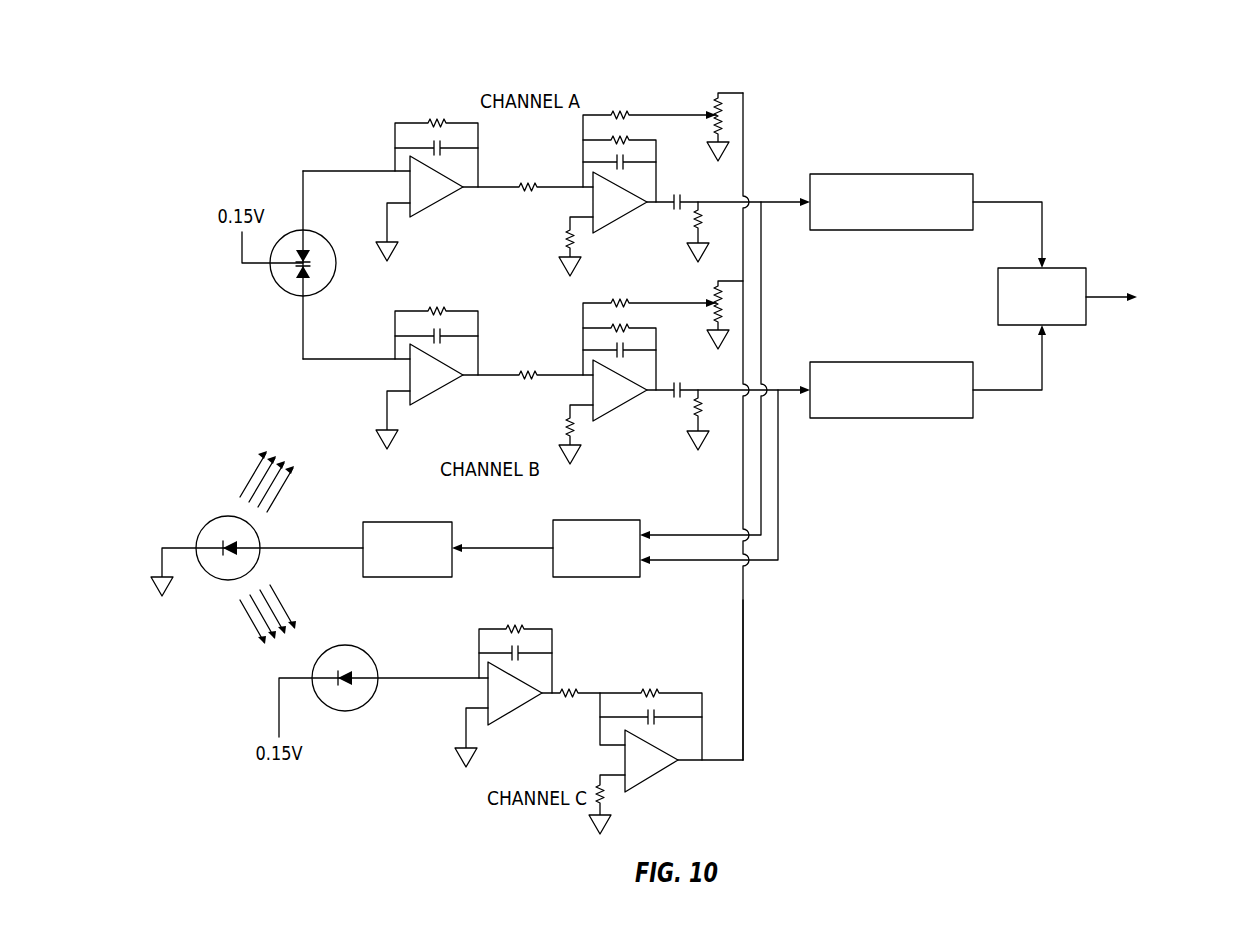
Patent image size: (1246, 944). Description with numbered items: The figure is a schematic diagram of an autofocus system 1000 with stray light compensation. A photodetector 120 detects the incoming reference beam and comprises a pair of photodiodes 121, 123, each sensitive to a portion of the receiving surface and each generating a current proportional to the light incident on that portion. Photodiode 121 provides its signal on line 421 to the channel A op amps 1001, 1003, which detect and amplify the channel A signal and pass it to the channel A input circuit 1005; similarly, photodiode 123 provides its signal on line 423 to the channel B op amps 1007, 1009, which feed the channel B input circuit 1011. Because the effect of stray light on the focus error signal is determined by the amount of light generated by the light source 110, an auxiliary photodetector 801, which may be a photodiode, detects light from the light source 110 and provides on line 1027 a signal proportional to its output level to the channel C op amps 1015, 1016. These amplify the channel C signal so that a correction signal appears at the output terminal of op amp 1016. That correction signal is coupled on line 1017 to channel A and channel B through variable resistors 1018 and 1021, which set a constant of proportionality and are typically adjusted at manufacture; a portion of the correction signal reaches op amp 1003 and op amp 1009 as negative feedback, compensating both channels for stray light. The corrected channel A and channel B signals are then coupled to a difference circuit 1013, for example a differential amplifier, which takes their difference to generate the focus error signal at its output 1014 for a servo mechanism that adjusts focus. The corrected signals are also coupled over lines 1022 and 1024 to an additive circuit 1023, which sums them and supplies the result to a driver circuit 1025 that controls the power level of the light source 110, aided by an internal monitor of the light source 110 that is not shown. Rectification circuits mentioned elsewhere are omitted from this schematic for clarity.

The autofocus system 1000 is at (1122, 101).
The light source 110 is at (232, 516).
The photodetector 120 is at (336, 265).
The photodiode 121 is at (305, 256).
The photodiode 123 is at (297, 272).
The line 421 is at (375, 170).
The line 423 is at (375, 358).
The channel A operational amplifier 1001 is at (437, 205).
The channel A operational amplifier 1003 is at (618, 218).
The channel A input circuit 1005 is at (893, 174).
The channel B operational amplifier 1007 is at (437, 392).
The channel B operational amplifier 1009 is at (618, 405).
The channel B input circuit 1011 is at (893, 362).
The difference circuit 1013 is at (998, 297).
The output 1014 is at (1100, 298).
The line 1017 is at (743, 643).
The variable resistor 1018 is at (716, 113).
The variable resistor 1021 is at (716, 301).
The line 1022 is at (762, 473).
The line 1024 is at (778, 512).
The additive circuit 1023 is at (597, 520).
The driver circuit 1025 is at (408, 522).
The auxiliary photodetector 801 is at (343, 646).
The line 1027 is at (392, 678).
The channel C operational amplifier 1015 is at (515, 708).
The channel C operational amplifier 1016 is at (648, 778).